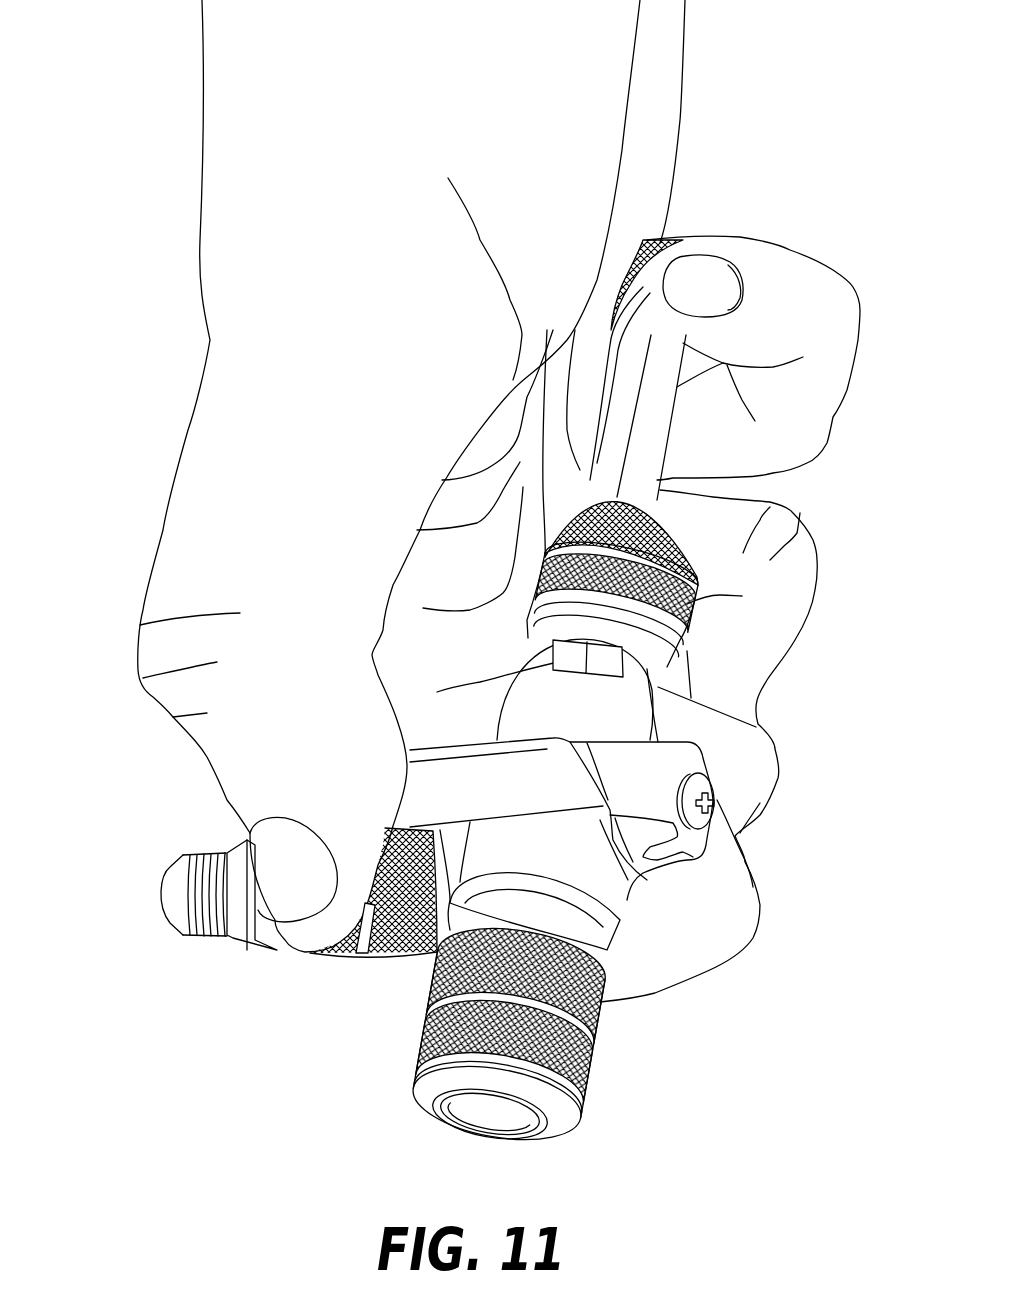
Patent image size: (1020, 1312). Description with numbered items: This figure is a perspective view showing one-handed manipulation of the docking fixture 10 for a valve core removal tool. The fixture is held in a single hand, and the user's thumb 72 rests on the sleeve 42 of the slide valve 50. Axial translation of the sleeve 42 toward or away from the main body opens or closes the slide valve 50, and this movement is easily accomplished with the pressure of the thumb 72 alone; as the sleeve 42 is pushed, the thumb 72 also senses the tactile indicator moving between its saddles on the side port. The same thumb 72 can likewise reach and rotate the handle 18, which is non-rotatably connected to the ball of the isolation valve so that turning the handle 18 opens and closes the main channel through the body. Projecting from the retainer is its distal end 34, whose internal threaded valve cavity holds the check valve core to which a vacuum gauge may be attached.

The docking fixture 10 is at (504, 745).
The handle 18 is at (427, 797).
The distal end 34 is at (172, 915).
The sleeve 42 is at (390, 960).
The slide valve 50 is at (275, 1073).
The thumb 72 is at (197, 700).